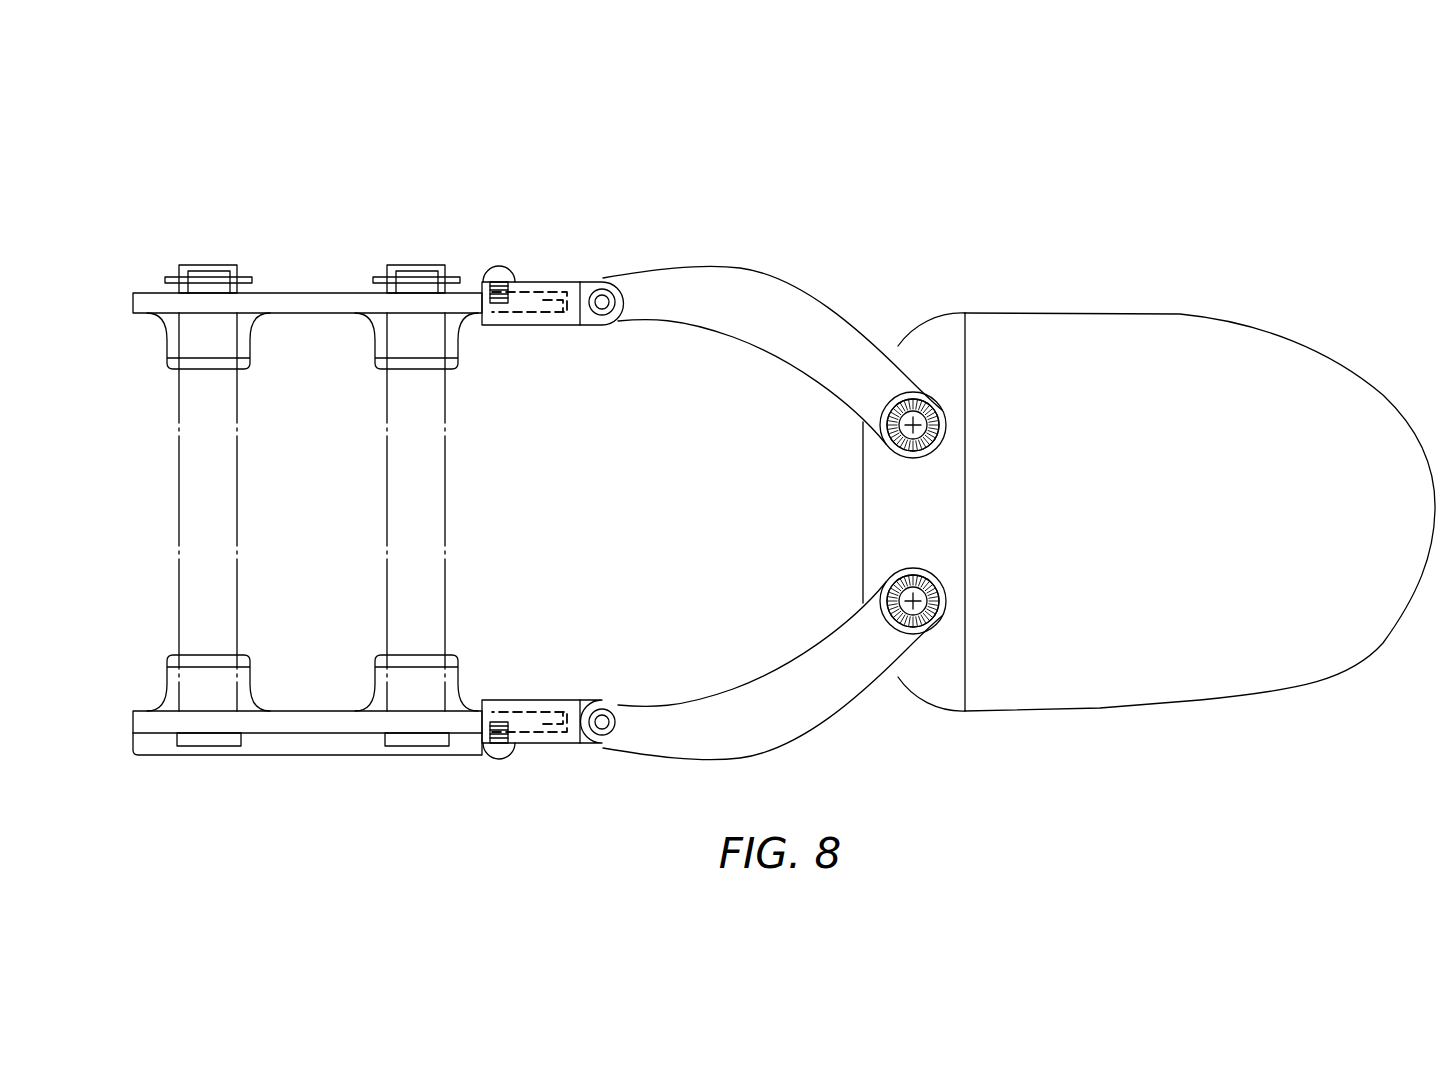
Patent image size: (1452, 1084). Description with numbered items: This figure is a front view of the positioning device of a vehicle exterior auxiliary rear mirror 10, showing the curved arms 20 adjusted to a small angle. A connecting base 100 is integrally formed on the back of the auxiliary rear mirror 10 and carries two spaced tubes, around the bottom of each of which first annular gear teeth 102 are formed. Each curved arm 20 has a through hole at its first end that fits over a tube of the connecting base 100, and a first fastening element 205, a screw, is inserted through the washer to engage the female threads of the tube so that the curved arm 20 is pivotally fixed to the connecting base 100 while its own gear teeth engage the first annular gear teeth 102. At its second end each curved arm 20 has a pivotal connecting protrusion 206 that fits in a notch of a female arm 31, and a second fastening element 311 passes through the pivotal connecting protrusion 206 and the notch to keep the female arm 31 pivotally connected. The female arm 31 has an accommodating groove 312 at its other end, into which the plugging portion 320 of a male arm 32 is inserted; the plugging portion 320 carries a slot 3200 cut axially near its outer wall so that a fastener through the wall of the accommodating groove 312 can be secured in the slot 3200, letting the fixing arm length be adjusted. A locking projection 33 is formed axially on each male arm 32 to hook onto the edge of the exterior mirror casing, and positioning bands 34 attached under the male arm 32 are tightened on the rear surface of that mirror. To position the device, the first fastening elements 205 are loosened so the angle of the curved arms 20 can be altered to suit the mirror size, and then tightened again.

The auxiliary rear mirror 10 is at (1307, 380).
The connecting base 100 is at (885, 516).
The first annular gear teeth 102 is at (883, 445).
The first fastening element 205 is at (887, 422).
The curved arm 20 is at (803, 310).
The pivotal connecting protrusion 206 is at (607, 282).
The female arm 31 is at (529, 282).
The second fastening element 311 is at (491, 271).
The accommodating groove 312 is at (572, 287).
The plugging portion 320 is at (592, 193).
The slot 3200 is at (542, 300).
The male arm 32 is at (335, 298).
The locking projection 33 is at (172, 338).
The positioning band 34 is at (198, 569).